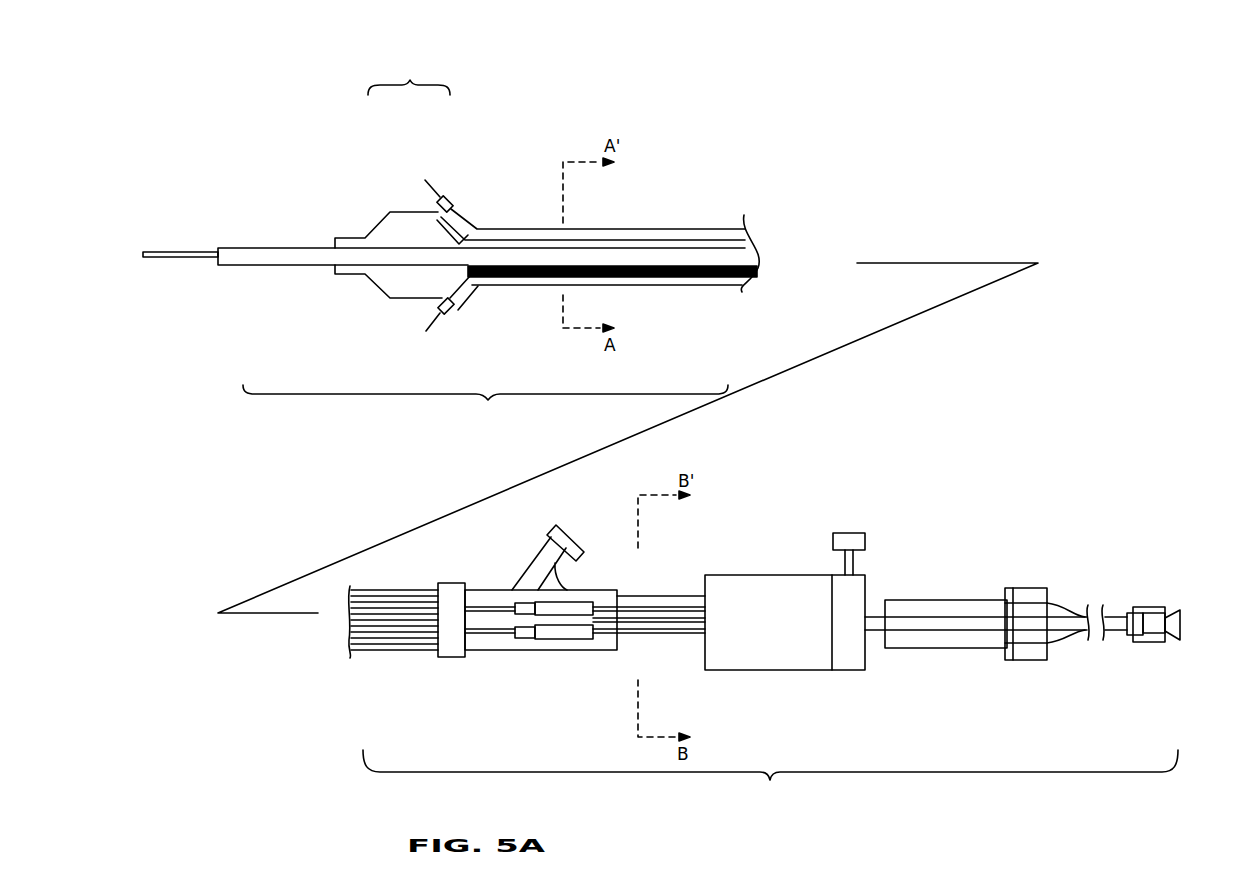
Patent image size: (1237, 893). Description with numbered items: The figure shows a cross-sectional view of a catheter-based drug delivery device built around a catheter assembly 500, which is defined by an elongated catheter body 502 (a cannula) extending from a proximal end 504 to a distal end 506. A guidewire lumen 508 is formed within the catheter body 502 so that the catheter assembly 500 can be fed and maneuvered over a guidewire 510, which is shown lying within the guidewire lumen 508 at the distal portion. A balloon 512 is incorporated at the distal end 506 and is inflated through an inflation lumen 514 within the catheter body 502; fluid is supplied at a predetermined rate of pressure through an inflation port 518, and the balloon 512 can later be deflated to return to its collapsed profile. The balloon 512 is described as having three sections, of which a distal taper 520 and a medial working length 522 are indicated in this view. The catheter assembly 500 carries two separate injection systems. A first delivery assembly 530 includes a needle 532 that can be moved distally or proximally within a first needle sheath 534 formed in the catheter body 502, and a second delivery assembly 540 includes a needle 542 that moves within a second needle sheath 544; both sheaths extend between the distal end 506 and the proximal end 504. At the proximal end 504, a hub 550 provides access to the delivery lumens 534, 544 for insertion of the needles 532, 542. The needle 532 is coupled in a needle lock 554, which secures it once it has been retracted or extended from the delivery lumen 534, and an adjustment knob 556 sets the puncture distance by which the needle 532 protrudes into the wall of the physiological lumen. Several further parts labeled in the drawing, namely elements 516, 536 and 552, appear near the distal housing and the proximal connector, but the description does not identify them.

The catheter assembly 500 is at (704, 109).
The catheter body 502 is at (684, 287).
The proximal end 504 is at (763, 699).
The distal end 506 is at (485, 404).
The guidewire lumen 508 is at (282, 266).
The guidewire 510 is at (203, 251).
The balloon 512 is at (393, 206).
The inflation lumen 514 is at (533, 278).
The lower housing 516 is at (382, 296).
The inflation port 518 is at (576, 519).
The distal taper 520 is at (366, 236).
The medial working length 522 is at (409, 77).
The first delivery assembly 530 is at (443, 172).
The needle 532 is at (446, 195).
The first needle sheath 534 is at (464, 219).
The strain relief 536 is at (442, 233).
The second delivery assembly 540 is at (449, 326).
The needle 542 is at (425, 329).
The second needle sheath 544 is at (465, 299).
The hub 550 is at (787, 574).
The electrical connector 552 is at (1150, 643).
The needle lock 554 is at (848, 532).
The adjustment knob 556 is at (977, 600).